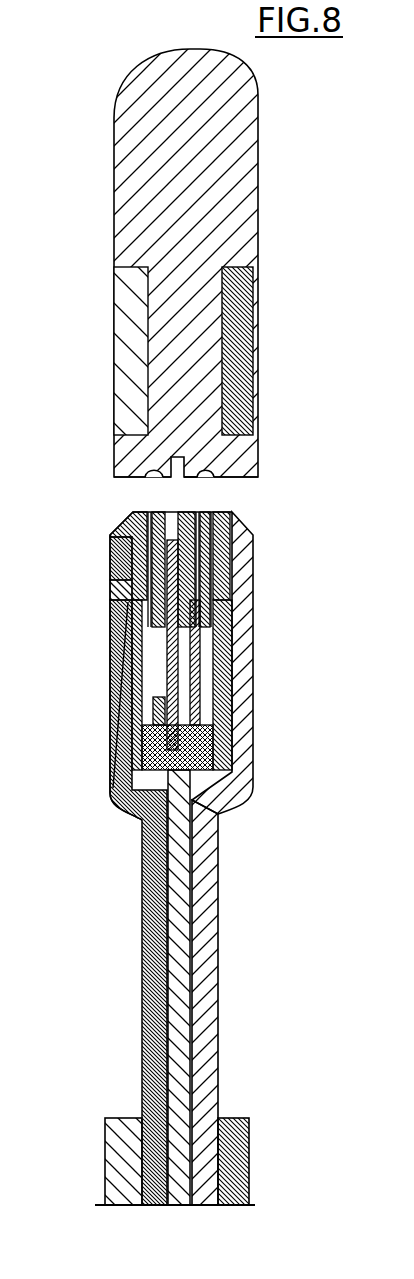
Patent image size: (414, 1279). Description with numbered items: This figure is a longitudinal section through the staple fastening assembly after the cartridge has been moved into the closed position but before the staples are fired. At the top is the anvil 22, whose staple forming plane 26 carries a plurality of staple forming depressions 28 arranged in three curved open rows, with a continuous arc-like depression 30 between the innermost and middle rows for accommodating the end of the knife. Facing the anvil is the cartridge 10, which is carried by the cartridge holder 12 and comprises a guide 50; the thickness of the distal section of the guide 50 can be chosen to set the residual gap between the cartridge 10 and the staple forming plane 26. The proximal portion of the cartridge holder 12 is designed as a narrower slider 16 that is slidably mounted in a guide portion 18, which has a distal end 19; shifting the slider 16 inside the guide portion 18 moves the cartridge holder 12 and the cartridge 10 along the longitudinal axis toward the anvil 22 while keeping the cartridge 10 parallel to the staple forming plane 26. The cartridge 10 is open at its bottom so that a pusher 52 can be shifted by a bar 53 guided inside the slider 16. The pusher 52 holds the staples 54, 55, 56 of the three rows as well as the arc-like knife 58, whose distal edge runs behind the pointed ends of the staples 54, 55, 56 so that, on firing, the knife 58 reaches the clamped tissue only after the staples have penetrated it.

The anvil 22 is at (243, 195).
The staple forming plane 26 is at (243, 480).
The staple forming depressions 28 is at (153, 479).
The arc-like depression 30 is at (170, 486).
The guide 50 is at (137, 502).
The staples 54 is at (110, 568).
The cartridge 10 is at (113, 622).
The arc-like knife 58 is at (113, 713).
The staples 55 is at (232, 563).
The staples 56 is at (232, 597).
The cartridge holder 12 is at (245, 652).
The pusher 52 is at (235, 752).
The bar 53 is at (185, 876).
The slider 16 is at (205, 957).
The distal end 19 is at (233, 1117).
The guide portion 18 is at (255, 1160).